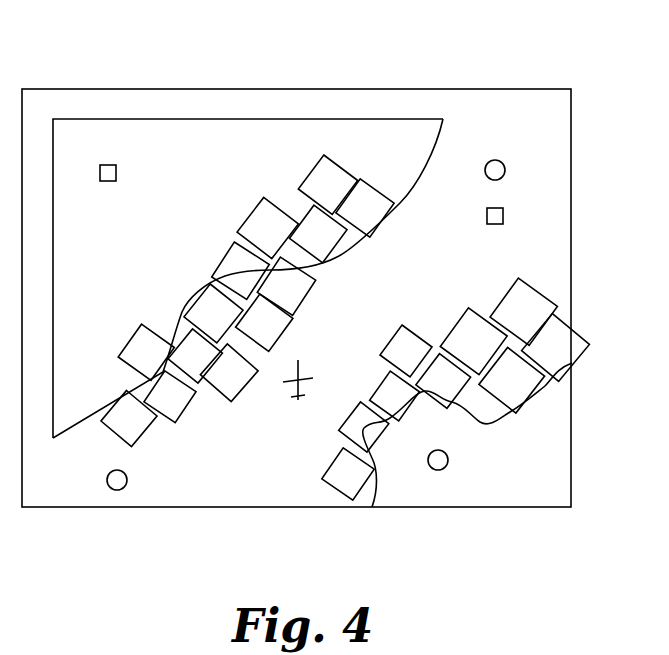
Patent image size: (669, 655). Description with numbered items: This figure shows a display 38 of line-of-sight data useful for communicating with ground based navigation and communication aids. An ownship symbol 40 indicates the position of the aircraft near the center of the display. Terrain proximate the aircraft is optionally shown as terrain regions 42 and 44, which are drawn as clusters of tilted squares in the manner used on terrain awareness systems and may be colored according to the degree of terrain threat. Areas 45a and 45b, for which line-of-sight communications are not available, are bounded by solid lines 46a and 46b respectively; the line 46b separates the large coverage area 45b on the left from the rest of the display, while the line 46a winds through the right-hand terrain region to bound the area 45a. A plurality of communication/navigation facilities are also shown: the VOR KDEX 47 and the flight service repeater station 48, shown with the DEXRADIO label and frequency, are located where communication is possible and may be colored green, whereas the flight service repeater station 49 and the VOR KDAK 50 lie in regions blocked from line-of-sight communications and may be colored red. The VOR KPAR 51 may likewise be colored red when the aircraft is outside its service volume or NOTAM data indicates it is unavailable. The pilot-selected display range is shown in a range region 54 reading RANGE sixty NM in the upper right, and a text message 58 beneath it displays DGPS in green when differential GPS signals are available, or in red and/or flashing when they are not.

The navigation display 38 is at (486, 68).
The ownship symbol 40 is at (302, 372).
The terrain region 42 is at (440, 319).
The terrain region 44 is at (347, 268).
The area without line-of-sight communications 45a is at (557, 409).
The area without line-of-sight communications 45b is at (262, 127).
The solid line 46a is at (365, 500).
The solid line 46b is at (78, 118).
The VOR KDEX 47 is at (505, 171).
The flight service repeater station 48 is at (487, 218).
The flight service repeater station 49 is at (110, 165).
The VOR KDAK 50 is at (440, 470).
The VOR KPAR 51 is at (114, 490).
The range region 54 is at (558, 90).
The graphics or text message 58 is at (546, 132).